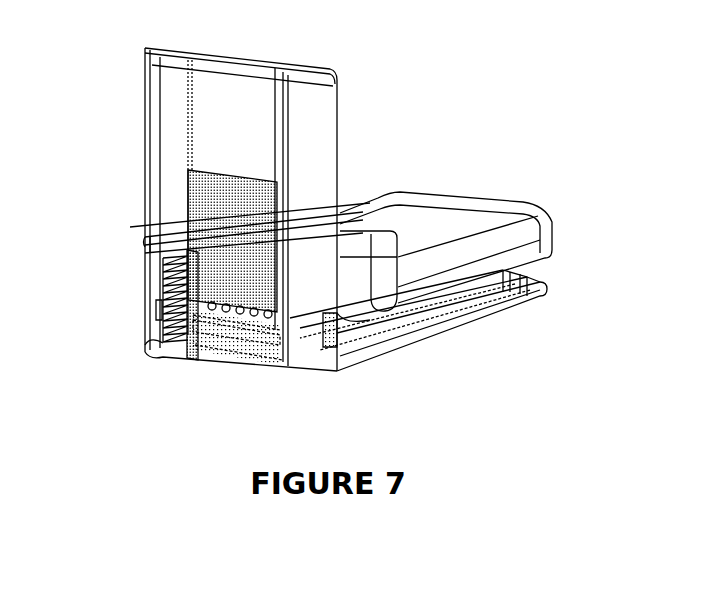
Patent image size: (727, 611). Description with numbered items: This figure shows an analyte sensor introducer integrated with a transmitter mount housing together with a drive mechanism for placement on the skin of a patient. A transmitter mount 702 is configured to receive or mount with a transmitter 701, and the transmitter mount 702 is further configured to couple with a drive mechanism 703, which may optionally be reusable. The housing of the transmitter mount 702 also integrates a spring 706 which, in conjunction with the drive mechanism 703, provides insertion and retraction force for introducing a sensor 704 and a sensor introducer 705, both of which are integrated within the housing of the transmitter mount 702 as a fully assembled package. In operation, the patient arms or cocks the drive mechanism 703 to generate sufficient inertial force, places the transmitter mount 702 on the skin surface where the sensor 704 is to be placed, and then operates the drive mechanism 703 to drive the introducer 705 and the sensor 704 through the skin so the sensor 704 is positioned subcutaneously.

The transmitter 701 is at (547, 217).
The transmitter mount 702 is at (507, 308).
The drive mechanism 703 is at (140, 55).
The sensor 704 is at (232, 298).
The sensor introducer 705 is at (200, 197).
The spring 706 is at (165, 275).